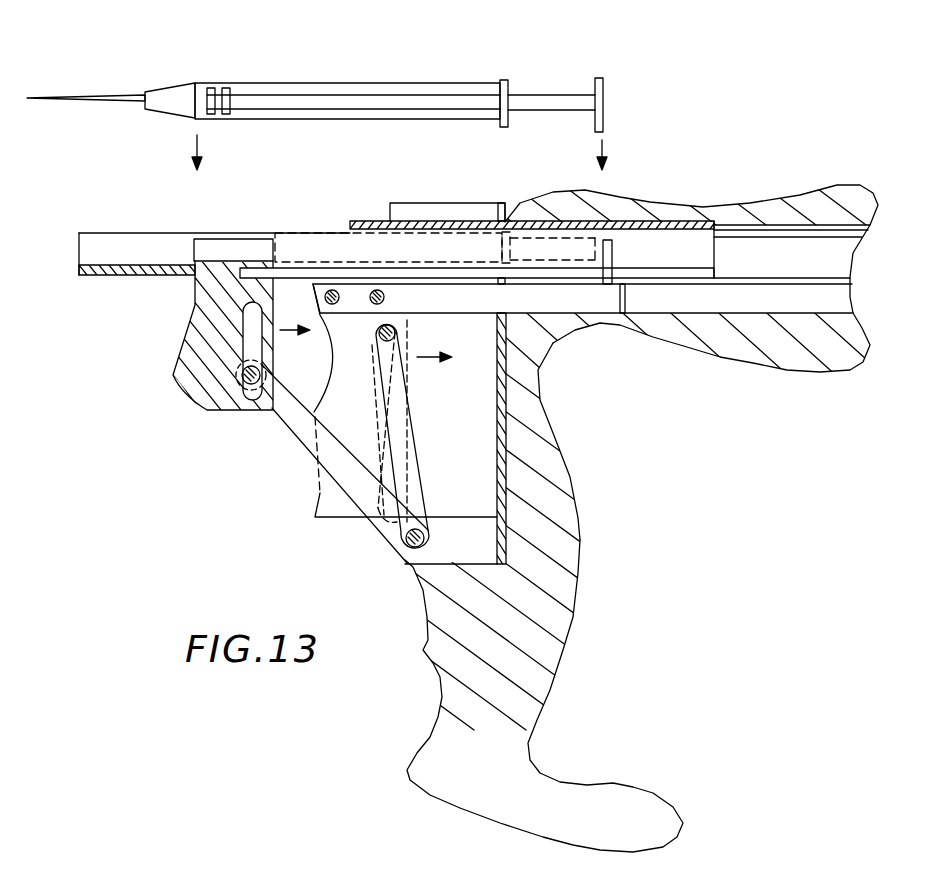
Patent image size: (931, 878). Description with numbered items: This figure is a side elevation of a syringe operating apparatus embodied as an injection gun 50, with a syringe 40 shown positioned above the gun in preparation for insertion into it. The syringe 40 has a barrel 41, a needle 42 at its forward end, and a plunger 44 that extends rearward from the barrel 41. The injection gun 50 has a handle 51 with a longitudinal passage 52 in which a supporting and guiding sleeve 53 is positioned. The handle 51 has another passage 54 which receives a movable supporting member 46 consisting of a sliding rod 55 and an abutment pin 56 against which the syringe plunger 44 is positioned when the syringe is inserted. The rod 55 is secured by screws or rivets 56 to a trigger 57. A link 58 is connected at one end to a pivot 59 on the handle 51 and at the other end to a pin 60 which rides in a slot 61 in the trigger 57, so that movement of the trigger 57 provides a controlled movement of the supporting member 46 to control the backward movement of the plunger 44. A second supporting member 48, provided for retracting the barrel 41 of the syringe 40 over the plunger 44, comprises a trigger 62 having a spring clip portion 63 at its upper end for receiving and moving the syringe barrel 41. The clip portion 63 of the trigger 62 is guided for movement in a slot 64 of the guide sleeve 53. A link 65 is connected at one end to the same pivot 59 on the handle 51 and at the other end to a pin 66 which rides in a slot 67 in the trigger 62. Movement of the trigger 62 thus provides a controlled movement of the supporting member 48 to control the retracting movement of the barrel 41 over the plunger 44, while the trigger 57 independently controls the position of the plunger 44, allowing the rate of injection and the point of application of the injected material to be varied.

The syringe 40 is at (317, 98).
The barrel 41 is at (405, 83).
The needle 42 is at (65, 100).
The plunger 44 is at (575, 97).
The movable member 46 is at (640, 300).
The supporting member 48 is at (196, 228).
The injection gun 50 is at (465, 439).
The handle 51 is at (571, 608).
The longitudinal passage 52 is at (702, 228).
The supporting and guiding sleeve 53 is at (437, 226).
The passage 54 is at (752, 310).
The sliding rod 55 is at (555, 307).
The abutment pin 56 is at (613, 256).
The trigger 57 is at (328, 496).
The link 58 is at (413, 478).
The pivot 59 is at (404, 553).
The pin 60 is at (400, 338).
The slot 61 is at (383, 438).
The trigger 62 is at (206, 322).
The spring clip portion 63 is at (203, 248).
The slot 64 is at (286, 275).
The link 65 is at (290, 416).
The pin 66 is at (250, 388).
The slot 67 is at (263, 327).